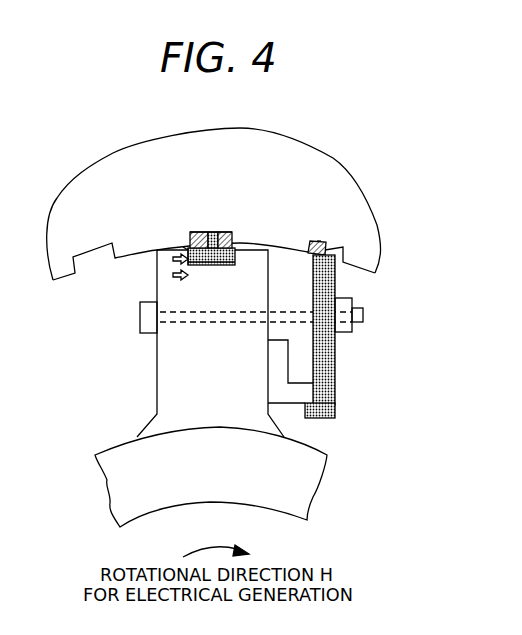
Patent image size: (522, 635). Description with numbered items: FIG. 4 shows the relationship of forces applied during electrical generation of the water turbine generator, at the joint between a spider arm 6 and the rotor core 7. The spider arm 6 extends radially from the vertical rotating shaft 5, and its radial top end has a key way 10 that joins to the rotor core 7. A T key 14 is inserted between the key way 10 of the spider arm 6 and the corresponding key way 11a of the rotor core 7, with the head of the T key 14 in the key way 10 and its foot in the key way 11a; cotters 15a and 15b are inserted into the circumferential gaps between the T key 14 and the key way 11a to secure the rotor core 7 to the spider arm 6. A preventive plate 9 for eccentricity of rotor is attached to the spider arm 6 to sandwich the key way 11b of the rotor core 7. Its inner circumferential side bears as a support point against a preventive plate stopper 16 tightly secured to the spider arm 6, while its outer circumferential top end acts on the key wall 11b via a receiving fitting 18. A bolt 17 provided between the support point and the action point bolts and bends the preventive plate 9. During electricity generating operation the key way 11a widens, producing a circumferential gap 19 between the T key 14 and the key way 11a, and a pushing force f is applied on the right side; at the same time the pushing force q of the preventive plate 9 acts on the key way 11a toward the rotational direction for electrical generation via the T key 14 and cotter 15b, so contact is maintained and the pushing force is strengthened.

The vertical rotating shaft 5 is at (203, 495).
The spider arm 6 is at (185, 385).
The rotor core 7 is at (317, 167).
The preventive plate for eccentricity of rotor 9 is at (322, 340).
The key way 10 is at (210, 267).
The key way 11a is at (218, 232).
The key way 11b is at (329, 243).
The T key 14 is at (213, 232).
The cotter 15a is at (198, 233).
The cotter 15b is at (227, 232).
The preventive plate stopper 16 is at (298, 393).
The bolt 17 is at (357, 313).
The receiving fitting 18 is at (308, 241).
The circumferential gap 19 is at (189, 246).
The pushing force q is at (185, 248).
The pushing force f is at (172, 276).